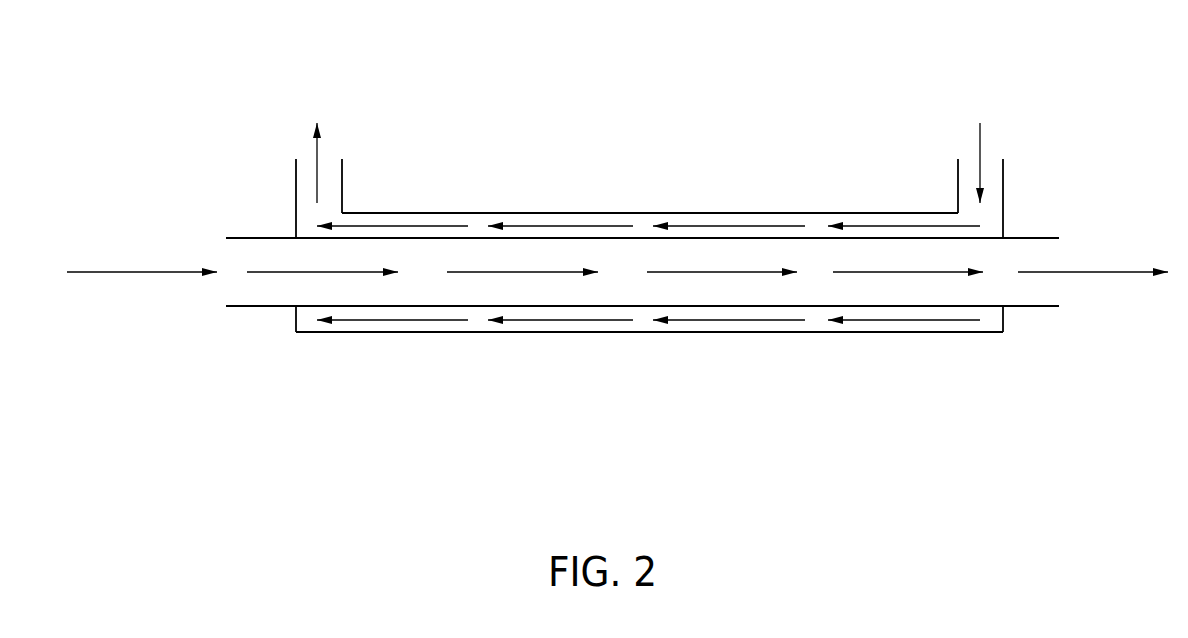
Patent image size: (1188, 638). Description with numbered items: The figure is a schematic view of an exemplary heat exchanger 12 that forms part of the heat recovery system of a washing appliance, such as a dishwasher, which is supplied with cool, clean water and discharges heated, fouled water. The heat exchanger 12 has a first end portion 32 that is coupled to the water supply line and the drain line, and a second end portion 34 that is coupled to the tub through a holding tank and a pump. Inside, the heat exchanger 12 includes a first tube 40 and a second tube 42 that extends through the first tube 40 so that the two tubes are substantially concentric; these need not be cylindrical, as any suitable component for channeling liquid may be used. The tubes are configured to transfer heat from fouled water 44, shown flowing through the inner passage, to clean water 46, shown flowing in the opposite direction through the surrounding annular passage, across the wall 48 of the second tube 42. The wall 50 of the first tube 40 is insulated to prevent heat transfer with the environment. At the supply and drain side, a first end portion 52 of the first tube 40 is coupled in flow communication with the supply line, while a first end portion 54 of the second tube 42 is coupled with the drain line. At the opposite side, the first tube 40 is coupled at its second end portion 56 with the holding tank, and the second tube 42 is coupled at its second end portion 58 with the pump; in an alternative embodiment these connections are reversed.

The heat exchanger 12 is at (990, 68).
The first end portion 32 is at (992, 380).
The second end portion 34 is at (283, 402).
The first tube 40 is at (808, 325).
The second tube 42 is at (637, 288).
The fouled water 44 is at (738, 272).
The clean water 46 is at (560, 318).
The wall of second tube 48 is at (920, 308).
The wall of first tube 50 is at (367, 333).
The first end portion of first tube 52 is at (1005, 165).
The first end portion of second tube 54 is at (1030, 238).
The second end portion of first tube 56 is at (342, 198).
The second end portion of second tube 58 is at (258, 308).